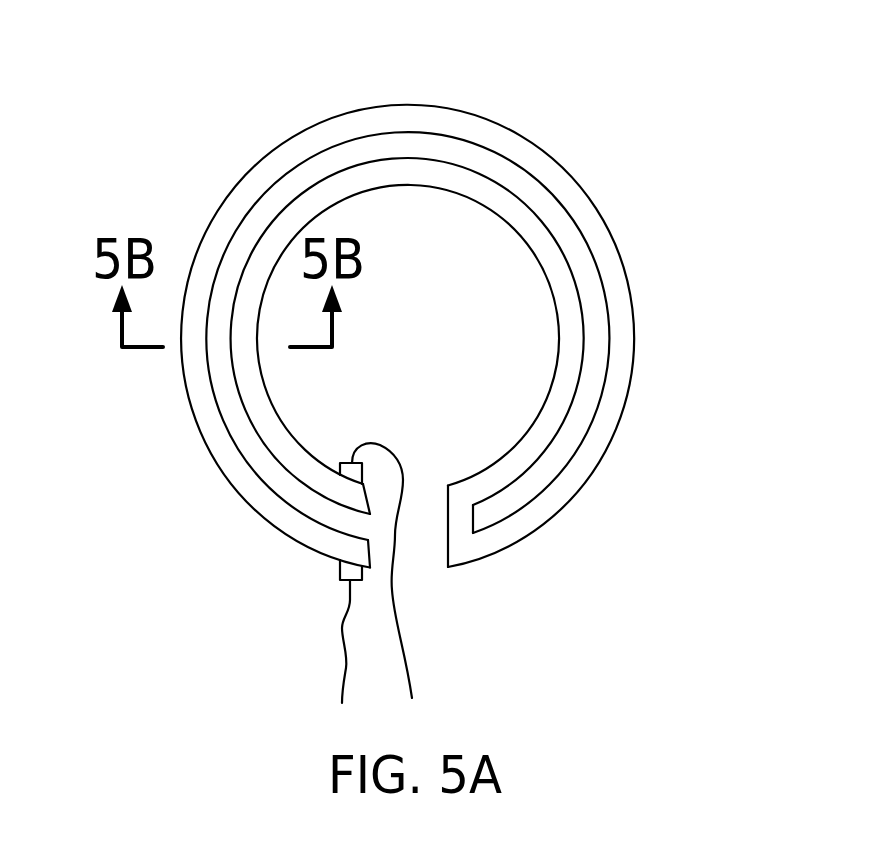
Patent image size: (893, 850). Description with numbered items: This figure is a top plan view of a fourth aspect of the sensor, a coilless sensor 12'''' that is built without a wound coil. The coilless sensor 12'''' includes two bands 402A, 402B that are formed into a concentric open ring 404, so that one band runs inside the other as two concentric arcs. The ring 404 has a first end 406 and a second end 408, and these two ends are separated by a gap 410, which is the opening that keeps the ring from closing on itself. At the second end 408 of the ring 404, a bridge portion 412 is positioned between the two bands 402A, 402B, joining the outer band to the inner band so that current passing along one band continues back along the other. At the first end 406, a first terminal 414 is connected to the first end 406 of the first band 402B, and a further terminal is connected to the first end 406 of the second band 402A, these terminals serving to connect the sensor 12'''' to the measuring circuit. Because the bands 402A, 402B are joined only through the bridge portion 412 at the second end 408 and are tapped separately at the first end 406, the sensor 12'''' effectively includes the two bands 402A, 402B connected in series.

The coilless sensor 12'''' is at (420, 358).
The second band 402A is at (535, 237).
The first band 402B is at (612, 248).
The concentric open ring 404 is at (192, 128).
The first end 406 is at (308, 577).
The second end 408 is at (476, 585).
The gap 410 is at (431, 455).
The bridge portion 412 is at (460, 515).
The first terminal 414 is at (342, 686).